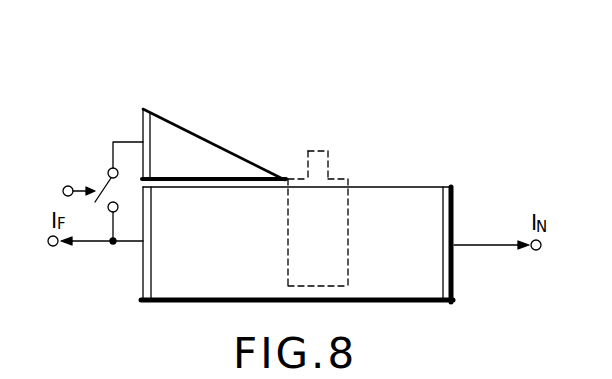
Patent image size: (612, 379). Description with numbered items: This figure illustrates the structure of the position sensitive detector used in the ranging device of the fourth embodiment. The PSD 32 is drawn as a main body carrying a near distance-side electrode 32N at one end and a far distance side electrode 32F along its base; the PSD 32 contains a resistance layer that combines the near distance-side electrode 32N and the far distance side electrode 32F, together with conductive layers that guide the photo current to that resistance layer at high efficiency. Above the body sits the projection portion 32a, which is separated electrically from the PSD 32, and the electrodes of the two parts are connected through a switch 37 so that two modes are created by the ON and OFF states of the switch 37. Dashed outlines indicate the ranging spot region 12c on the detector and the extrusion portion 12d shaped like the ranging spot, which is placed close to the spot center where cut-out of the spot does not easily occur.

The PSD 32 is at (407, 186).
The near distance-side electrode 32N is at (453, 187).
The far distance side electrode 32F is at (143, 298).
The projection portion 32a is at (183, 127).
The light beam region 12c is at (347, 170).
The extrusion portion 12d is at (326, 140).
The switch 37 is at (103, 168).